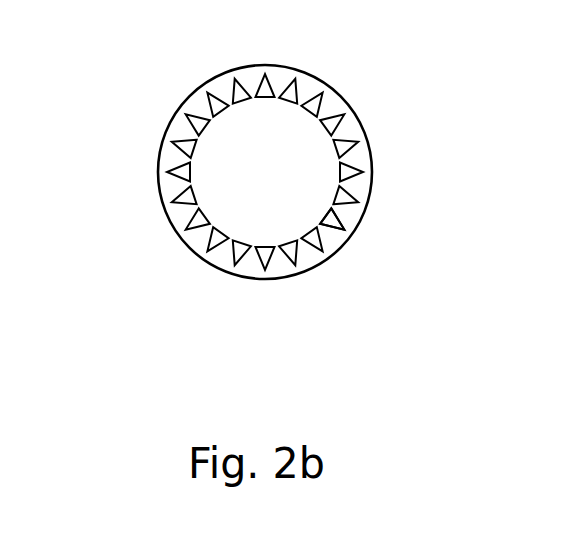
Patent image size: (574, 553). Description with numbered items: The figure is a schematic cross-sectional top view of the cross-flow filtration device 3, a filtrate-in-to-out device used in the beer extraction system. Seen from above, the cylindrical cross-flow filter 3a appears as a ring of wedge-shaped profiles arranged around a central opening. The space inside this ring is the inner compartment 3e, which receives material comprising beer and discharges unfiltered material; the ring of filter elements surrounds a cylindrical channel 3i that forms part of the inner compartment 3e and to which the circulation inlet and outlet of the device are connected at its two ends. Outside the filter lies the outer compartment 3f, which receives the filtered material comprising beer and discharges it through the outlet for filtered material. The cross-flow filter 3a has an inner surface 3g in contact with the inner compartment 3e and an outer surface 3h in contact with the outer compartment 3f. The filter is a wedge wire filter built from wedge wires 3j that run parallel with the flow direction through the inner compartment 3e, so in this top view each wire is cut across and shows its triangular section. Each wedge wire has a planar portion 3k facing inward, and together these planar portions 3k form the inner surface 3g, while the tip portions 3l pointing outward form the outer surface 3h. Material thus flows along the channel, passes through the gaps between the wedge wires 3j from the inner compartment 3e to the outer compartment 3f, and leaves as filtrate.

The cross-flow filtration device 3 is at (364, 124).
The cross-flow filter 3a is at (259, 259).
The inner compartment 3e is at (289, 207).
The outer compartment 3f is at (360, 190).
The inner surface 3g is at (207, 206).
The outer surface 3h is at (298, 269).
The cylindrical channel 3i is at (300, 140).
The wedge wires 3j is at (264, 78).
The planar portions 3k is at (210, 116).
The tip portions 3l is at (178, 231).